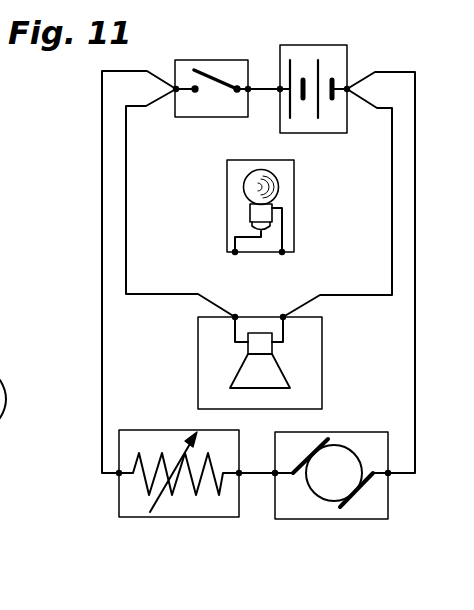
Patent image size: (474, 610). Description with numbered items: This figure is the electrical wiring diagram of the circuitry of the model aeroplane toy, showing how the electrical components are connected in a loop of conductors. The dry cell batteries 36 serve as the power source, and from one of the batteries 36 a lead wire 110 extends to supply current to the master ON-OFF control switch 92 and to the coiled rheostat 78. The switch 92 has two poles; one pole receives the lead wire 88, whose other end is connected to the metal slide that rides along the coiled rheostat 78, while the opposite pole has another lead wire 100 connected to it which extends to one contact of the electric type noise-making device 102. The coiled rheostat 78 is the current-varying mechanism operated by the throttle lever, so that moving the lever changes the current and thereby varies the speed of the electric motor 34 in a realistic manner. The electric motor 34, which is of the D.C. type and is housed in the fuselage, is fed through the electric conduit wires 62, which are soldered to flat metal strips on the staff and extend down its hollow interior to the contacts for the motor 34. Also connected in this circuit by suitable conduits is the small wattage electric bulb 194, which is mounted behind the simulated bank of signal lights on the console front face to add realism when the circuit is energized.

The lead wire 88 is at (102, 127).
The lead wire 100 is at (126, 170).
The electric conduit wires 62 is at (415, 332).
The lead wire 110 is at (265, 89).
The master ON-OFF control switch 92 is at (195, 60).
The dry cell batteries 36 is at (318, 45).
The electric bulb 194 is at (278, 182).
The noise-making device 102 is at (310, 379).
The coiled rheostat 78 is at (160, 430).
The electric motor 34 is at (335, 432).